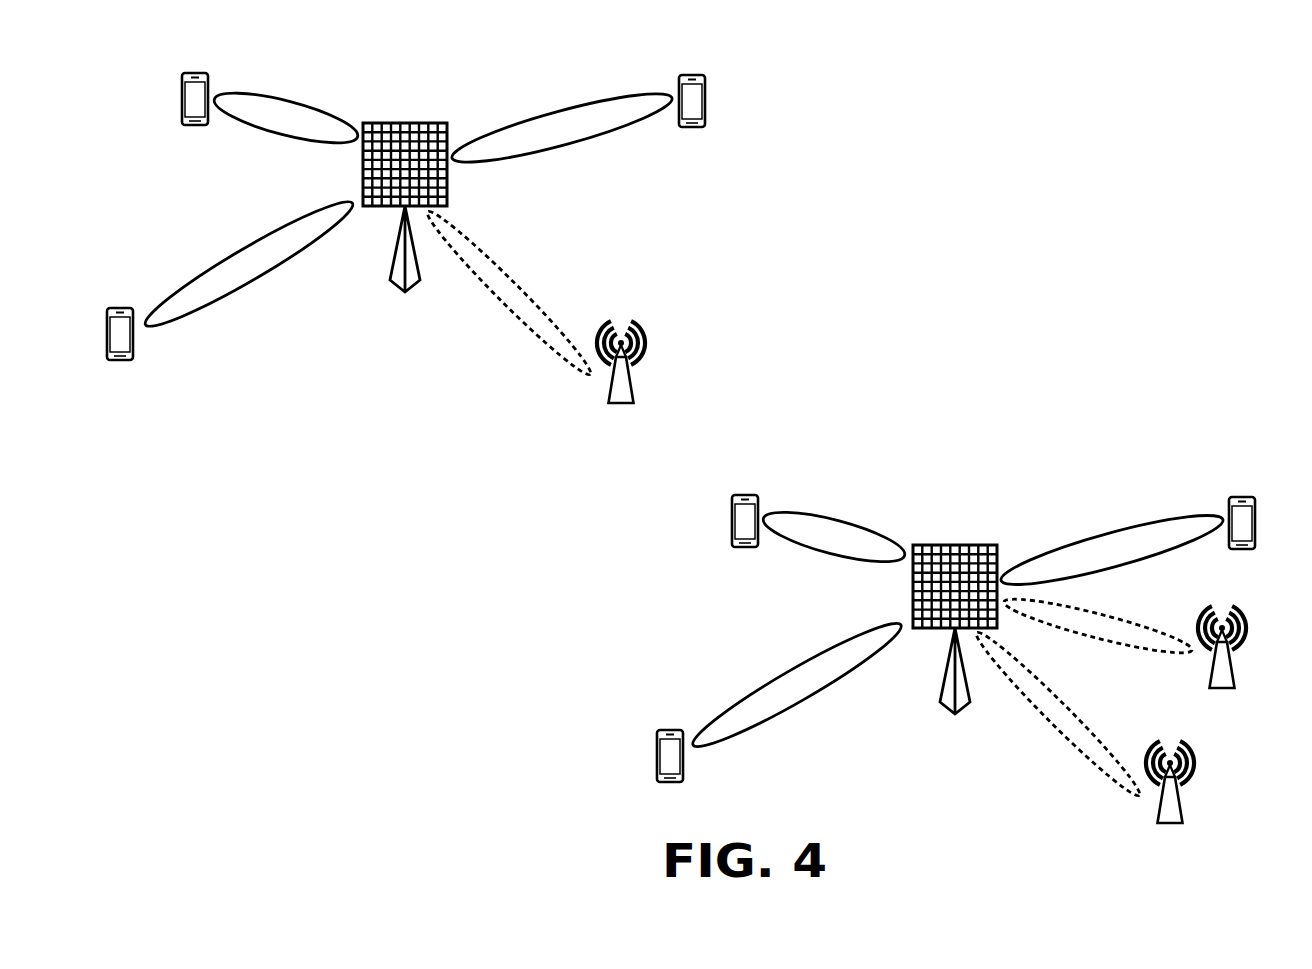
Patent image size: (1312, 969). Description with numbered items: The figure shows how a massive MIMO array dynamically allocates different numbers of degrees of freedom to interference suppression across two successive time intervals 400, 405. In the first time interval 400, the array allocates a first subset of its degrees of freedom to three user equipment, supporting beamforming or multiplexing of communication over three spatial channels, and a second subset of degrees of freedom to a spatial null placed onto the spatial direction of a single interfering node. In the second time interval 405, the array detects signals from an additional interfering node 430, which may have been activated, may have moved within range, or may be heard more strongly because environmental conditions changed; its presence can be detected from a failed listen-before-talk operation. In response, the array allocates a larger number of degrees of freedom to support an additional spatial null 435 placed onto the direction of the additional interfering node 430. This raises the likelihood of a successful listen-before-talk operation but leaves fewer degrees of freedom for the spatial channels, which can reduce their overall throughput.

The time interval 400 is at (762, 124).
The time interval 405 is at (550, 574).
The additional interfering node 430 is at (1222, 690).
The additional spatial null 435 is at (1133, 648).